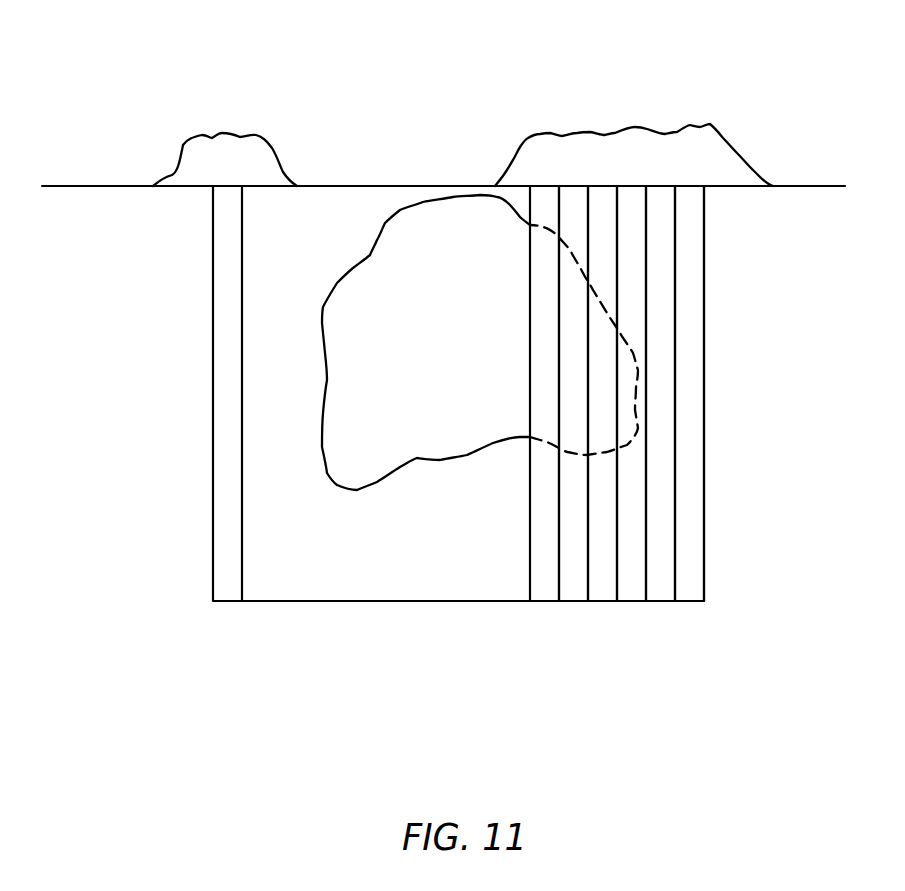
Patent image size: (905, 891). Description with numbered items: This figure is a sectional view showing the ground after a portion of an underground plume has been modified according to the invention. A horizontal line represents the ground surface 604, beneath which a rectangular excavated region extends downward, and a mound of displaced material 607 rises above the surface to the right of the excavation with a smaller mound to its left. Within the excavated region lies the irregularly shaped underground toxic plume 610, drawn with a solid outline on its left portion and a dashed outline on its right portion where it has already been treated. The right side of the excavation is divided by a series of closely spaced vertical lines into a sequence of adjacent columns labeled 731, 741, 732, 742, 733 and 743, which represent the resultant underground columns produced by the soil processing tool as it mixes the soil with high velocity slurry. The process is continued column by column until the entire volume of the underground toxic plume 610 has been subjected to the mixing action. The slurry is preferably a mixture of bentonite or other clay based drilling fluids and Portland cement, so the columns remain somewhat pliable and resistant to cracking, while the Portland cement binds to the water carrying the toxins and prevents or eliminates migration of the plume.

The substrate surface 604 is at (387, 186).
The mask layer 607 is at (542, 132).
The underground toxic plume 610 is at (433, 363).
The first layer 731 is at (549, 593).
The second layer 741 is at (582, 593).
The third layer 732 is at (606, 593).
The fourth layer 742 is at (631, 593).
The fifth layer 733 is at (658, 593).
The sixth layer 743 is at (693, 593).